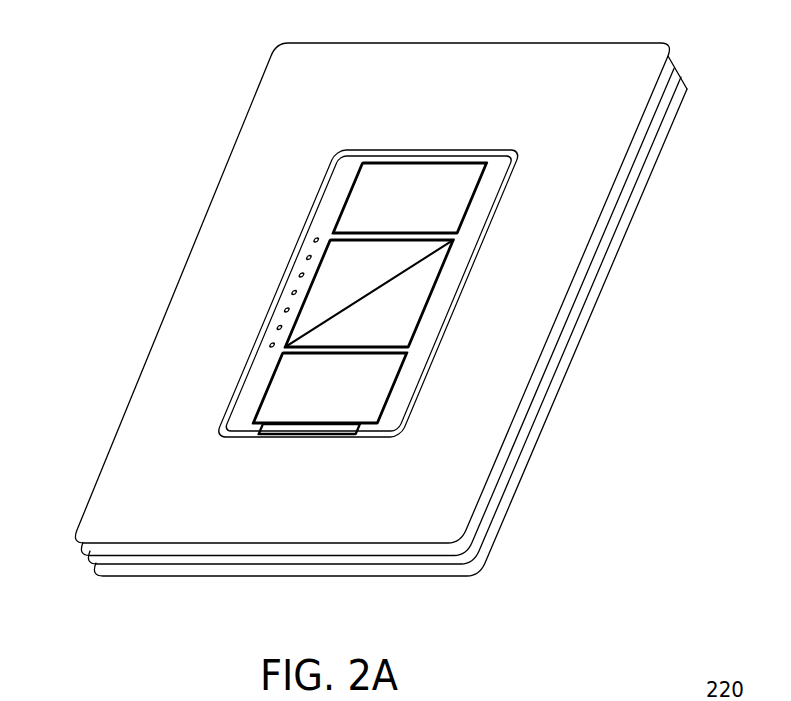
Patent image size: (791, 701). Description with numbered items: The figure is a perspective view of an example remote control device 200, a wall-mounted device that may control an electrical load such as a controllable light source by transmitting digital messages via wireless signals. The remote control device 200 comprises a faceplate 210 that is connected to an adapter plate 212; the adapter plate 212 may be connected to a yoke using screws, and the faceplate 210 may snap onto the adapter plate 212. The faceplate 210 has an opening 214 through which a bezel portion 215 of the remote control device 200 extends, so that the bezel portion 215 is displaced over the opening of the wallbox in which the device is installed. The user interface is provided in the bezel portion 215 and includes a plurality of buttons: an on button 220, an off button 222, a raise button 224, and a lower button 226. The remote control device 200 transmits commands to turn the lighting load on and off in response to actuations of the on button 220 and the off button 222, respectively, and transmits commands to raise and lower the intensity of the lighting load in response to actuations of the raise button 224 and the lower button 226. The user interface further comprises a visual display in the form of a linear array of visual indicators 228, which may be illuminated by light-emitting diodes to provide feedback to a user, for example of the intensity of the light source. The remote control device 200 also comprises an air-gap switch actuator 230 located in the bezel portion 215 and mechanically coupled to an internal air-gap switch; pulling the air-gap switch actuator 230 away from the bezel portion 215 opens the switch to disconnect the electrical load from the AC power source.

The remote control device 200 is at (125, 150).
The faceplate 210 is at (220, 258).
The adapter plate 212 is at (398, 571).
The opening 214 is at (487, 253).
The bezel portion 215 is at (492, 177).
The on button 220 is at (412, 200).
The off button 222 is at (352, 393).
The raise button 224 is at (352, 270).
The lower button 226 is at (393, 308).
The visual indicators 228 is at (271, 367).
The air-gap switch actuator 230 is at (297, 435).